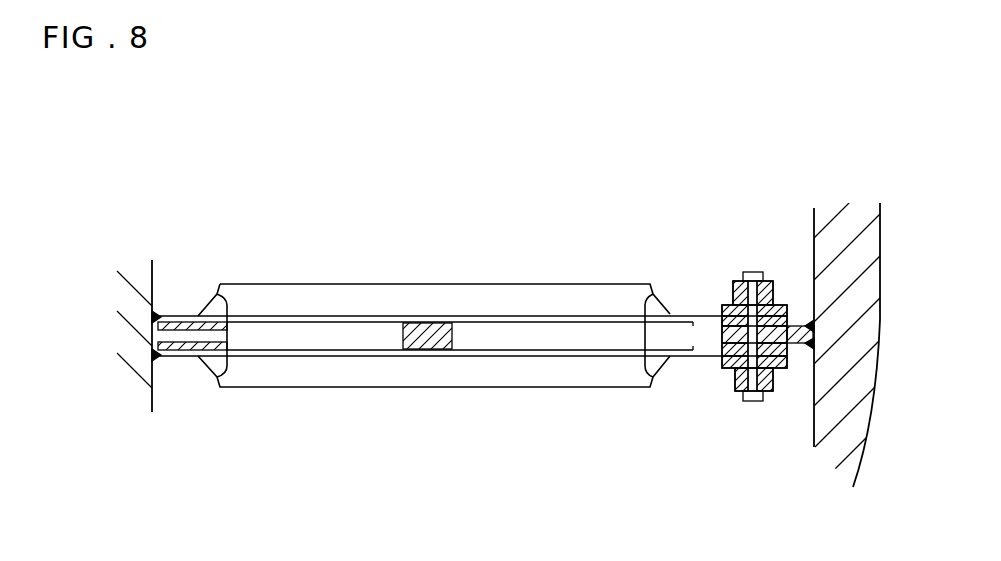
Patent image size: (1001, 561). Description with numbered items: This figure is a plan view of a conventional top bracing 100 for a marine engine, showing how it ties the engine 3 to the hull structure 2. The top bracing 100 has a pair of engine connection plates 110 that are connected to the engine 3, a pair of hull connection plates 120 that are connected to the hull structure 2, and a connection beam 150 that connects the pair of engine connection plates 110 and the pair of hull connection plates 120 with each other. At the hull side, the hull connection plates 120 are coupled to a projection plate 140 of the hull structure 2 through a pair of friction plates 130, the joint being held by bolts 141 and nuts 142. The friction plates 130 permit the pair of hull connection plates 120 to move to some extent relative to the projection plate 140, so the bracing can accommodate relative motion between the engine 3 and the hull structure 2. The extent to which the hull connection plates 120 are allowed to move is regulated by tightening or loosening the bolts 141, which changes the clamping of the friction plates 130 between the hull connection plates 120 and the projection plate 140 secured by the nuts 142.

The hull structure 2 is at (825, 217).
The engine 3 is at (122, 393).
The conventional top bracing 100 is at (492, 251).
The engine connection plates 110 is at (178, 322).
The hull connection plates 120 is at (688, 313).
The friction plates 130 is at (720, 326).
The projection plate 140 is at (795, 348).
The bolts 141 is at (753, 293).
The nuts 142 is at (735, 404).
The connection beam 150 is at (370, 357).